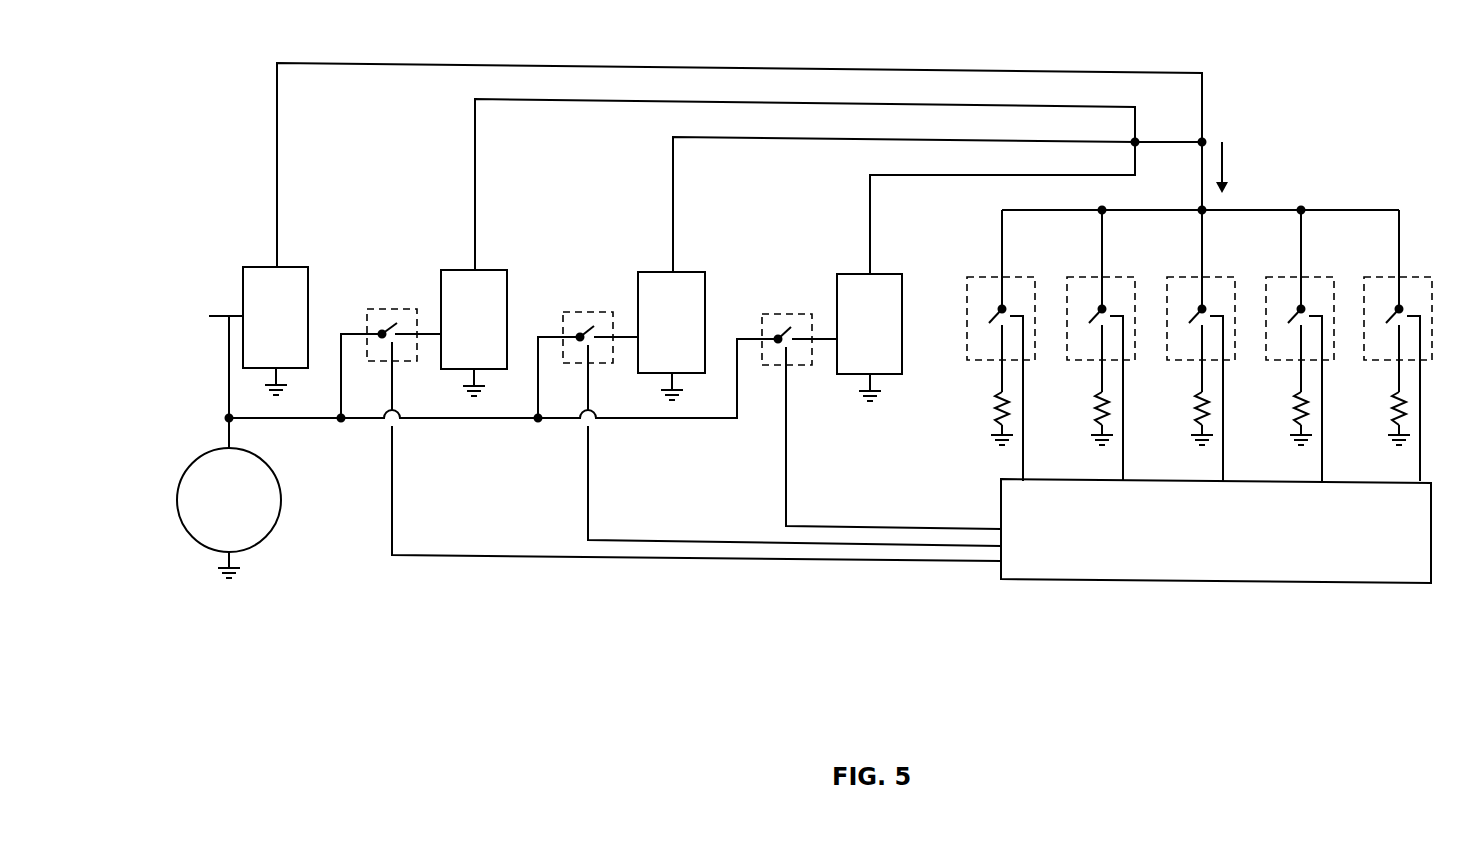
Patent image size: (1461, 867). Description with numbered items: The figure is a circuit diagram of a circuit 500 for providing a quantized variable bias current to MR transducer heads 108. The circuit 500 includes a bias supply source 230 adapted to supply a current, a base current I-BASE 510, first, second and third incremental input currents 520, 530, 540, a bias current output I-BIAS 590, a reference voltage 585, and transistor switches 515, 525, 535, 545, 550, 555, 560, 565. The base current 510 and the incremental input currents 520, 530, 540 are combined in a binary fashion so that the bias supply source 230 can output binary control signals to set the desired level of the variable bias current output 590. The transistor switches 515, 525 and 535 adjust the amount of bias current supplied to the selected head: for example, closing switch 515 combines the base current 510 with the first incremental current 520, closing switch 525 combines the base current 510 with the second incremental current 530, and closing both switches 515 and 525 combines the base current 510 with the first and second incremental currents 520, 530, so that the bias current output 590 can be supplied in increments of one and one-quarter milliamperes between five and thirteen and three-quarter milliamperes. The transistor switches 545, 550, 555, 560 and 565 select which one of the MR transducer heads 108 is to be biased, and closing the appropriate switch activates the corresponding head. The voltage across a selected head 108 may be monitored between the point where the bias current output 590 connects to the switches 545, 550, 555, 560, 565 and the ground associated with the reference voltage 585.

The circuit 500 is at (432, 40).
The base current I_BASE 510 is at (258, 267).
The transistor switch 515 is at (392, 309).
The incremental input current I_1 520 is at (460, 268).
The transistor switch 525 is at (590, 312).
The incremental input current I_2 530 is at (657, 272).
The transistor switch 535 is at (790, 314).
The incremental input current I_3 540 is at (853, 274).
The transistor switch 545 is at (987, 277).
The transistor switch 550 is at (1087, 277).
The transistor switch 555 is at (1187, 277).
The transistor switch 560 is at (1286, 277).
The transistor switch 565 is at (1384, 277).
The MR transducer head 108 is at (999, 407).
The reference voltage 585 is at (280, 492).
The bias current output I_BIAS 590 is at (1200, 182).
The bias supply source 230 is at (1068, 580).